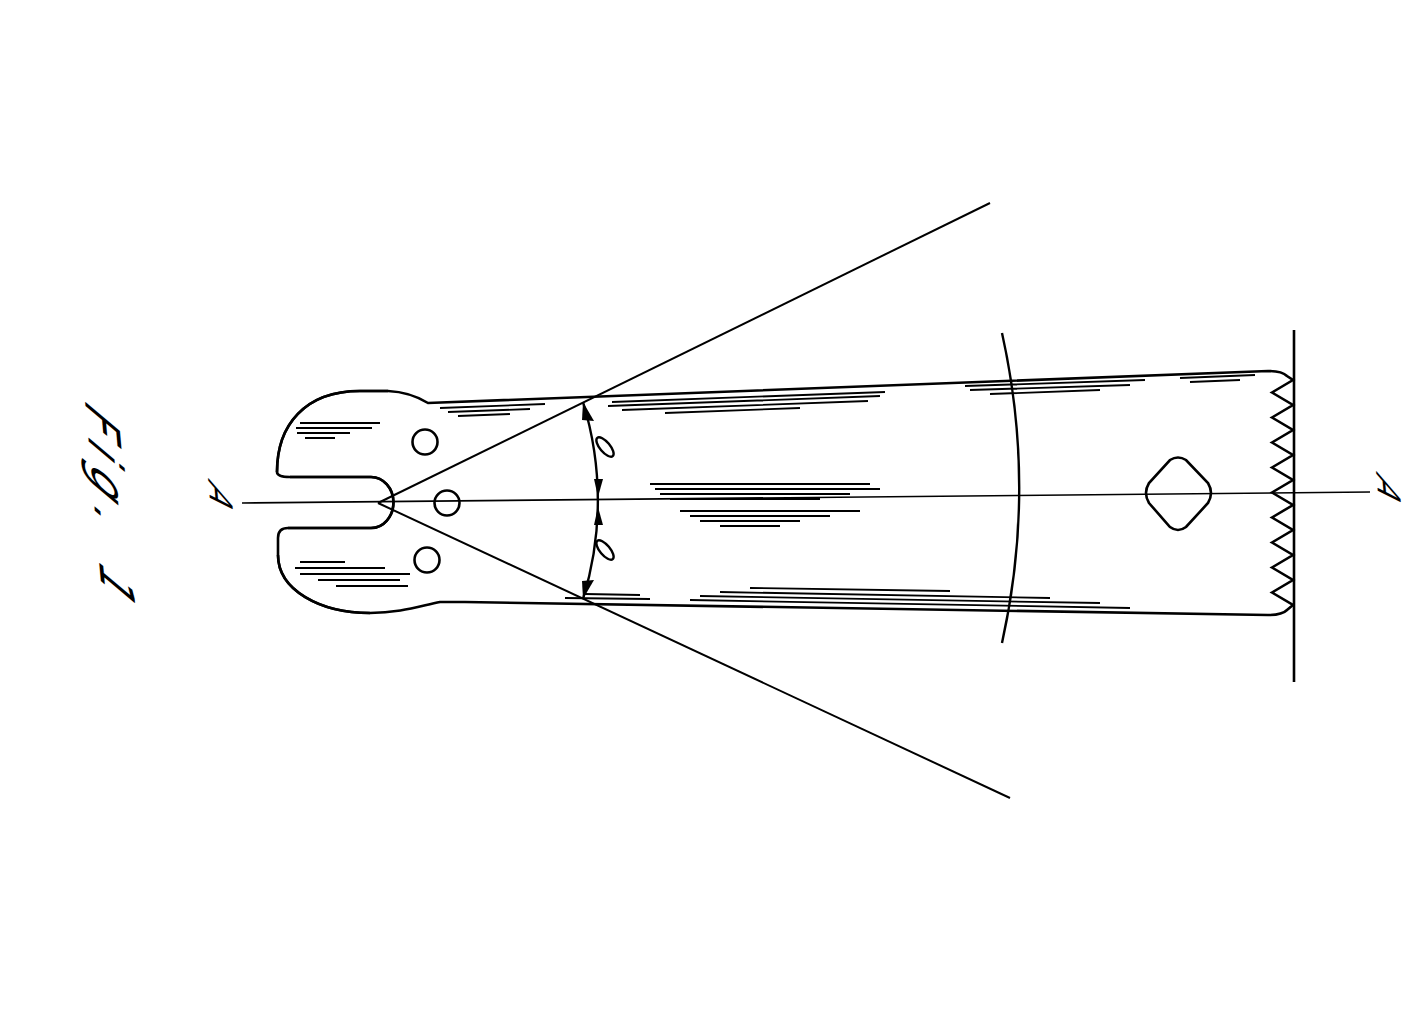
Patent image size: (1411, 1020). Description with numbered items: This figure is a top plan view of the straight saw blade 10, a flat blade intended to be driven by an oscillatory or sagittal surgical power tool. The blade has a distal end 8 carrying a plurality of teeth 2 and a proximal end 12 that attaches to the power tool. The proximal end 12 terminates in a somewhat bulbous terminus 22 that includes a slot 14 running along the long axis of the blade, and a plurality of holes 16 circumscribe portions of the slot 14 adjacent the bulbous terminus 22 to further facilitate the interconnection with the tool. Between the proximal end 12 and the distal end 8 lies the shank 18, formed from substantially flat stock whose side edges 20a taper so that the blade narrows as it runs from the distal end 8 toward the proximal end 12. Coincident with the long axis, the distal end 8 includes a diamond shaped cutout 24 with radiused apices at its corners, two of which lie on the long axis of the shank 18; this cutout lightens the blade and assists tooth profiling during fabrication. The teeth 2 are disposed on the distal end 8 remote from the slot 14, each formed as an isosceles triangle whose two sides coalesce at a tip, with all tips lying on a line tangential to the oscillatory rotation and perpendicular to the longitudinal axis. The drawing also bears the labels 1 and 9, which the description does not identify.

The direction of cut / blade plane indicator 1 is at (1312, 658).
The teeth 2 is at (1293, 553).
The distal end 8 is at (1242, 573).
The tooth line / cutting line 9 is at (1293, 380).
The straight saw blade 10 is at (1170, 318).
The proximal end 12 is at (540, 535).
The slot 14 is at (308, 478).
The holes 16 is at (455, 491).
The shank 18 is at (1293, 407).
The side edges 20a is at (945, 611).
The bulbous terminus 22 is at (377, 613).
The diamond shaped cutout 24 is at (1165, 529).